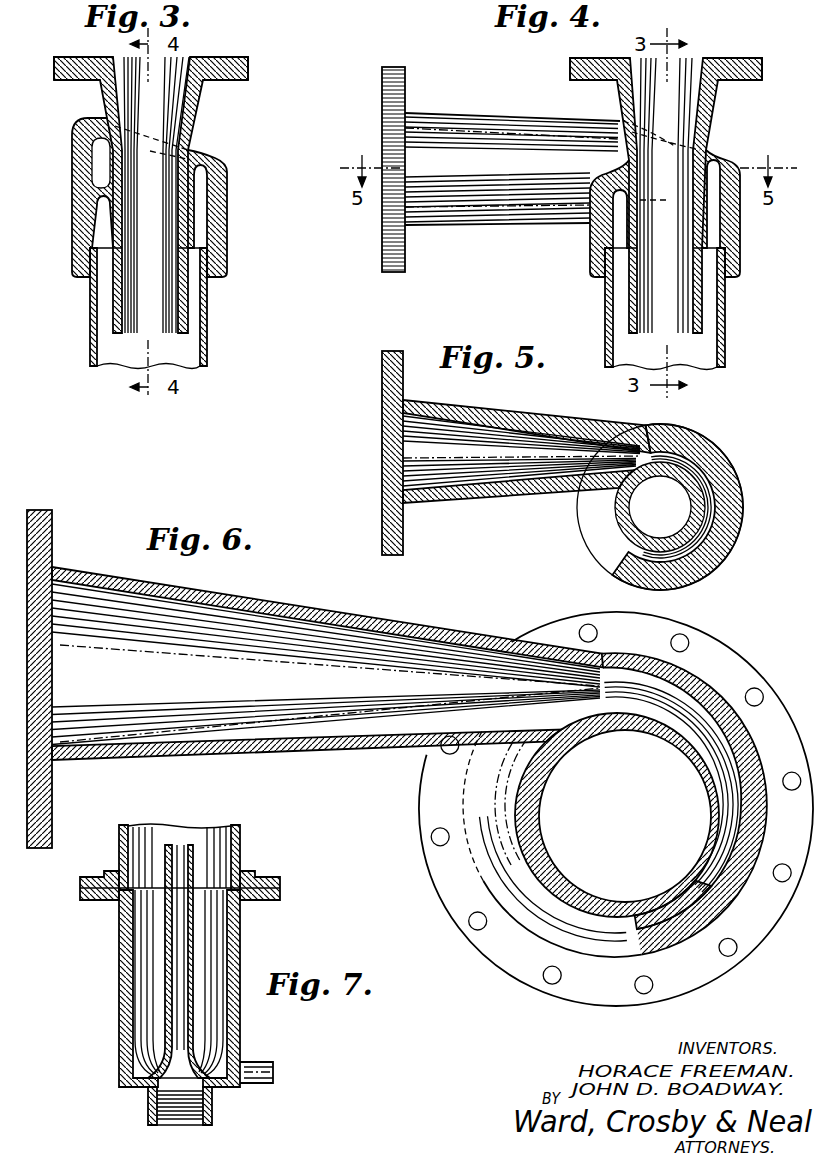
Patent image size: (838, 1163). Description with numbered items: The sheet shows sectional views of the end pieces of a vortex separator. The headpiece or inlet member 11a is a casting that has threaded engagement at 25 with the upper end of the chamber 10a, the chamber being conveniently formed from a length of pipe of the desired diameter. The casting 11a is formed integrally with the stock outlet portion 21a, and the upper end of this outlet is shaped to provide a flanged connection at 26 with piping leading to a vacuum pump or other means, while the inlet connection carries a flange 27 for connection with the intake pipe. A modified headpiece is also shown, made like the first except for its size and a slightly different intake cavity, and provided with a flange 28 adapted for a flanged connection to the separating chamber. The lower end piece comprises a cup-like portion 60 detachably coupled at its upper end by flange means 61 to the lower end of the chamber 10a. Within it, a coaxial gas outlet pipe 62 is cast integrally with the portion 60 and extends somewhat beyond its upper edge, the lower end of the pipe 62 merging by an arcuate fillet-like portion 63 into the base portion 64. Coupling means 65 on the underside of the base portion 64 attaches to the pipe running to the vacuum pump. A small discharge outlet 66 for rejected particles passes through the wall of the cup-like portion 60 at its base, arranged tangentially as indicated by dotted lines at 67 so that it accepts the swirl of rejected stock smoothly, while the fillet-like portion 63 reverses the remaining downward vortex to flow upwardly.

In FIG. 3, the chamber 10a is at (208, 300).
In FIG. 4, the chamber 10a is at (727, 313).
In FIG. 7, the chamber 10a is at (242, 832).
In FIG. 3, the headpiece or inlet member 11a is at (226, 161).
In FIG. 4, the headpiece or inlet member 11a is at (730, 151).
In FIG. 5, the headpiece or inlet member 11a is at (744, 498).
In FIG. 3, the stock outlet portion 21a is at (172, 205).
In FIG. 5, the stock outlet portion 21a is at (673, 486).
In FIG. 3, the threaded engagement 25 is at (212, 252).
In FIG. 4, the threaded engagement 25 is at (728, 260).
In FIG. 3, the flanged connection 26 is at (232, 80).
In FIG. 4, the flanged connection 26 is at (570, 69).
In FIG. 4, the flange 27 is at (407, 83).
In FIG. 5, the flange 27 is at (382, 370).
In FIG. 6, the flange 28 is at (420, 809).
In FIG. 7, the cup-like portion 60 is at (241, 965).
In FIG. 7, the flange means 61 is at (280, 888).
In FIG. 7, the gas outlet pipe 62 is at (194, 930).
In FIG. 7, the fillet-like portion 63 is at (164, 1063).
In FIG. 7, the base portion 64 is at (140, 1087).
In FIG. 7, the coupling means 65 is at (213, 1115).
In FIG. 7, the discharge outlet 66 is at (274, 1074).
In FIG. 7, the tangential outlet arrangement 67 is at (215, 1067).